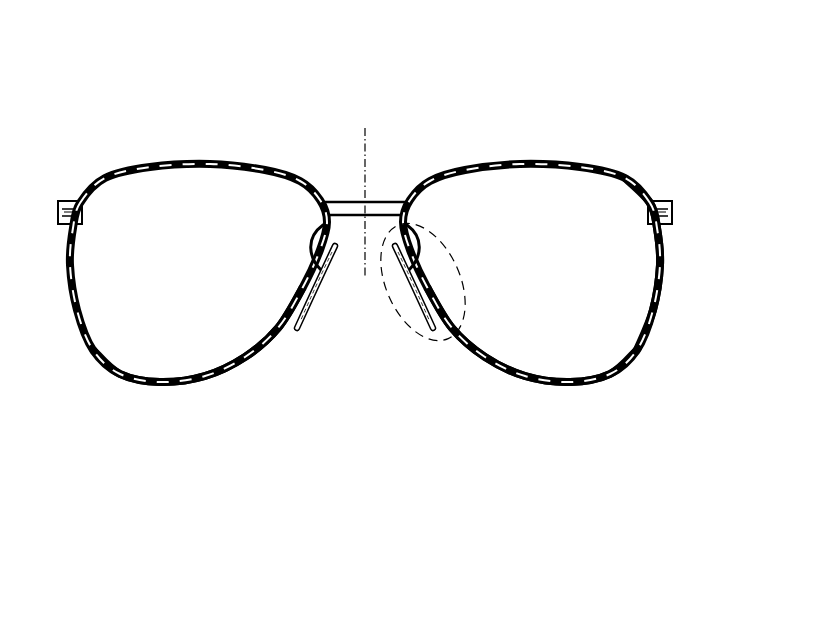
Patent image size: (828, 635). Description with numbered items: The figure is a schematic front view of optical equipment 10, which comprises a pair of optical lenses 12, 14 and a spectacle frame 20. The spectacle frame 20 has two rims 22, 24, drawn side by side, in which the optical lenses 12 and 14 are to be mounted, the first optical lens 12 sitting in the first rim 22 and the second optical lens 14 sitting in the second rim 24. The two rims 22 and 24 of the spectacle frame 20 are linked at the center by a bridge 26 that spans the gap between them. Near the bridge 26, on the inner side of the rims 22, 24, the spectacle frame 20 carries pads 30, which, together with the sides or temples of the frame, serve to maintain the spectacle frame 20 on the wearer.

The optical equipment 10 is at (597, 91).
The optical lens 12 is at (198, 193).
The optical lens 14 is at (532, 197).
The spectacle frame 20 is at (663, 279).
The rim 22 is at (152, 388).
The rim 24 is at (552, 387).
The bridge 26 is at (348, 203).
The pads 30 is at (417, 338).